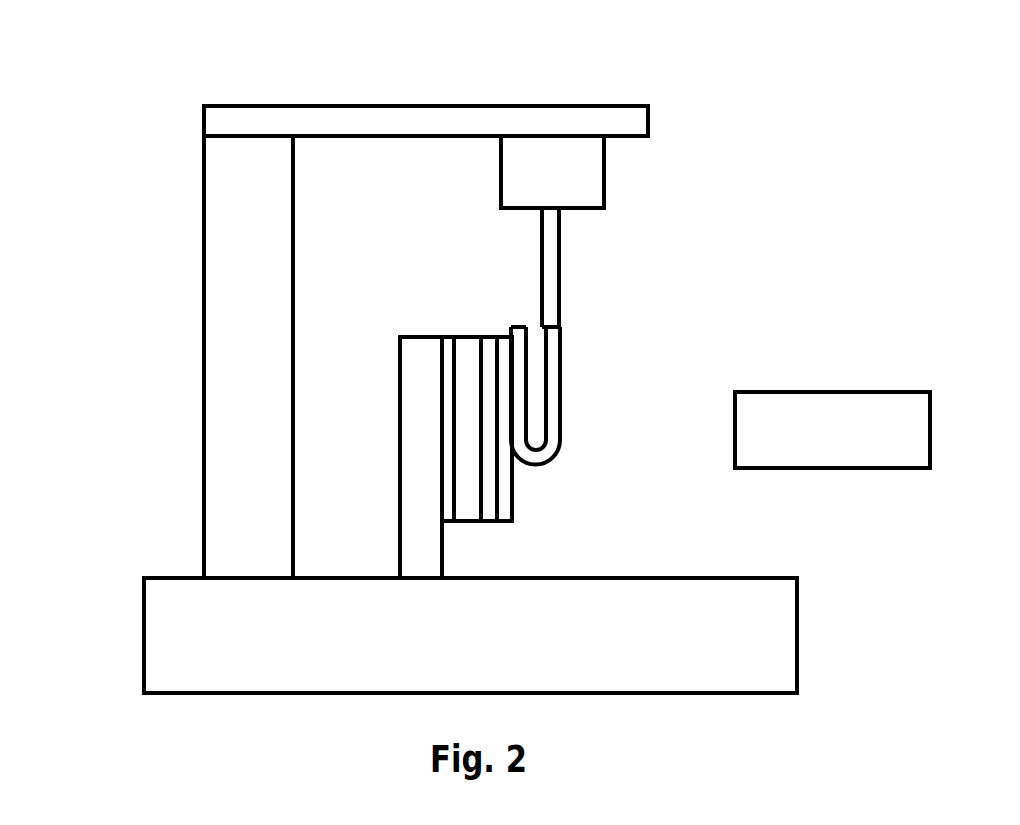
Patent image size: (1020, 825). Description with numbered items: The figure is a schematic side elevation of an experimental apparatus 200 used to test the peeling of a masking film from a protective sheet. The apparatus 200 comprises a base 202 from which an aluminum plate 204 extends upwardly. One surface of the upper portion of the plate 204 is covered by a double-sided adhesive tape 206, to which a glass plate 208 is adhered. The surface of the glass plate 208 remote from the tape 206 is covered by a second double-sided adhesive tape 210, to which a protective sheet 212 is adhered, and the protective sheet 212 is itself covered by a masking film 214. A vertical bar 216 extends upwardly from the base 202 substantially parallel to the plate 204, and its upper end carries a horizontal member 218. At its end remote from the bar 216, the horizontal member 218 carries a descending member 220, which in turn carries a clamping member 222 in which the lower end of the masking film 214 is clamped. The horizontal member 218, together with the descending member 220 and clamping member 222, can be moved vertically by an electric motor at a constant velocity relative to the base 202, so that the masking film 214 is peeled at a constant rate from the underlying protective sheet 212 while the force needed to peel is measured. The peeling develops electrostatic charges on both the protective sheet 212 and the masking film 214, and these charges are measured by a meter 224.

The experimental apparatus 200 is at (160, 362).
The base 202 is at (517, 658).
The aluminum plate 204 is at (427, 519).
The double-sided adhesive tape 206 is at (448, 350).
The glass plate 208 is at (470, 348).
The second double-sided adhesive tape 210 is at (492, 490).
The protective sheet 212 is at (507, 472).
The masking film 214 is at (553, 408).
The vertical bar 216 is at (287, 347).
The horizontal member 218 is at (447, 117).
The descending member 220 is at (580, 184).
The clamping member 222 is at (552, 279).
The meter 224 is at (870, 450).